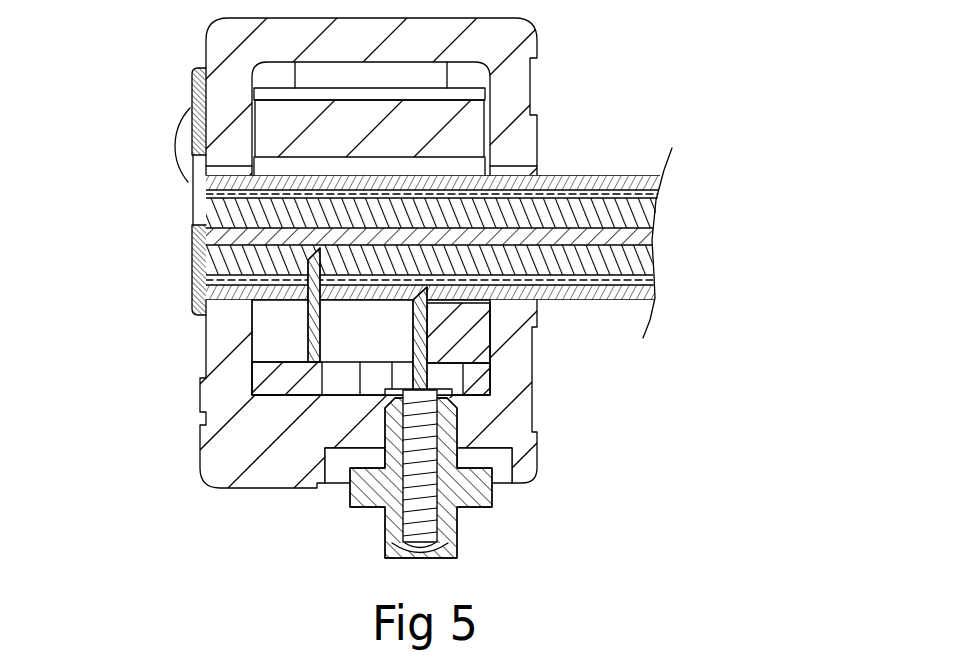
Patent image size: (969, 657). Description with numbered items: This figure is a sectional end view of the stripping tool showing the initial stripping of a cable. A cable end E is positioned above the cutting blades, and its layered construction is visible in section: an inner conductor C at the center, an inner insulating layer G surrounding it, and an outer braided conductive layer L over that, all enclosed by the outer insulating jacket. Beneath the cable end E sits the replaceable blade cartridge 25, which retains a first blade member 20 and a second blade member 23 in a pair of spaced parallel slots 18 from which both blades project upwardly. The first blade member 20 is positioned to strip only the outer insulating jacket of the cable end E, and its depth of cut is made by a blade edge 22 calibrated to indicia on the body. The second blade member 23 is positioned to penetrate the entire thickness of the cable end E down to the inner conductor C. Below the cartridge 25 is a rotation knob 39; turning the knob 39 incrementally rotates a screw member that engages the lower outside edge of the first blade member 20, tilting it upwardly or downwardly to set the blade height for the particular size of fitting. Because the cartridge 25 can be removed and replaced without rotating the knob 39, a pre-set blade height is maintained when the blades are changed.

The cable end E is at (496, 199).
The outer braided conductive layer L is at (496, 214).
The inner insulating layer G is at (491, 236).
The inner conductor C is at (150, 191).
The blade cartridge 25 is at (366, 250).
The slots 18 is at (371, 344).
The second blade member 23 is at (292, 391).
The blade edge 22 is at (519, 347).
The first blade member 20 is at (537, 413).
The rotation knob 39 is at (473, 514).